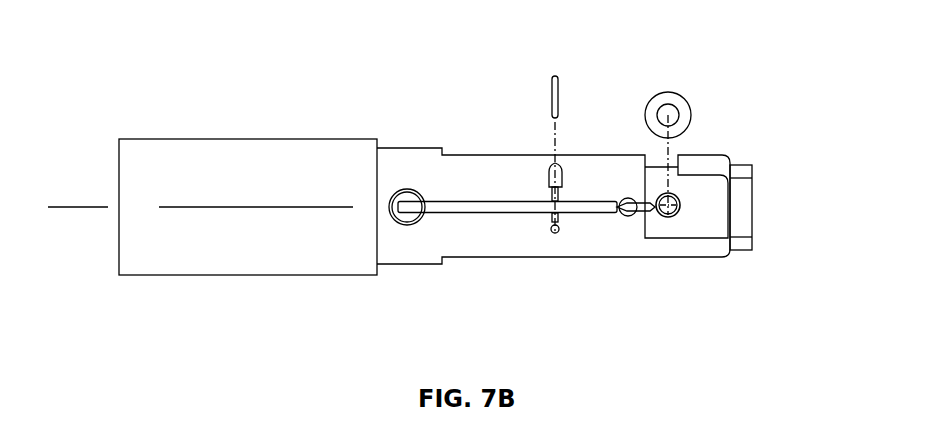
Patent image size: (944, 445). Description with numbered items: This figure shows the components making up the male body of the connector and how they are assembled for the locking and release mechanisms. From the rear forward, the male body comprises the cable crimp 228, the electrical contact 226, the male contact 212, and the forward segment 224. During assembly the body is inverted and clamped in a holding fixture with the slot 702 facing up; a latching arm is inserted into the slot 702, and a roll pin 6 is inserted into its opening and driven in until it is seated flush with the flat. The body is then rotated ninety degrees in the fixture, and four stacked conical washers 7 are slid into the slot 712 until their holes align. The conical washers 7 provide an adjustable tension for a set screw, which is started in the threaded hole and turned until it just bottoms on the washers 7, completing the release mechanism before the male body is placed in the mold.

The cable crimp 228 is at (229, 248).
The electrical contact 226 is at (409, 243).
The male contact 212 is at (575, 246).
The forward segment 224 is at (717, 248).
The slot 702 is at (515, 205).
The slot 712 is at (674, 195).
The roll pin 6 is at (560, 85).
The conical washers 7 is at (672, 92).